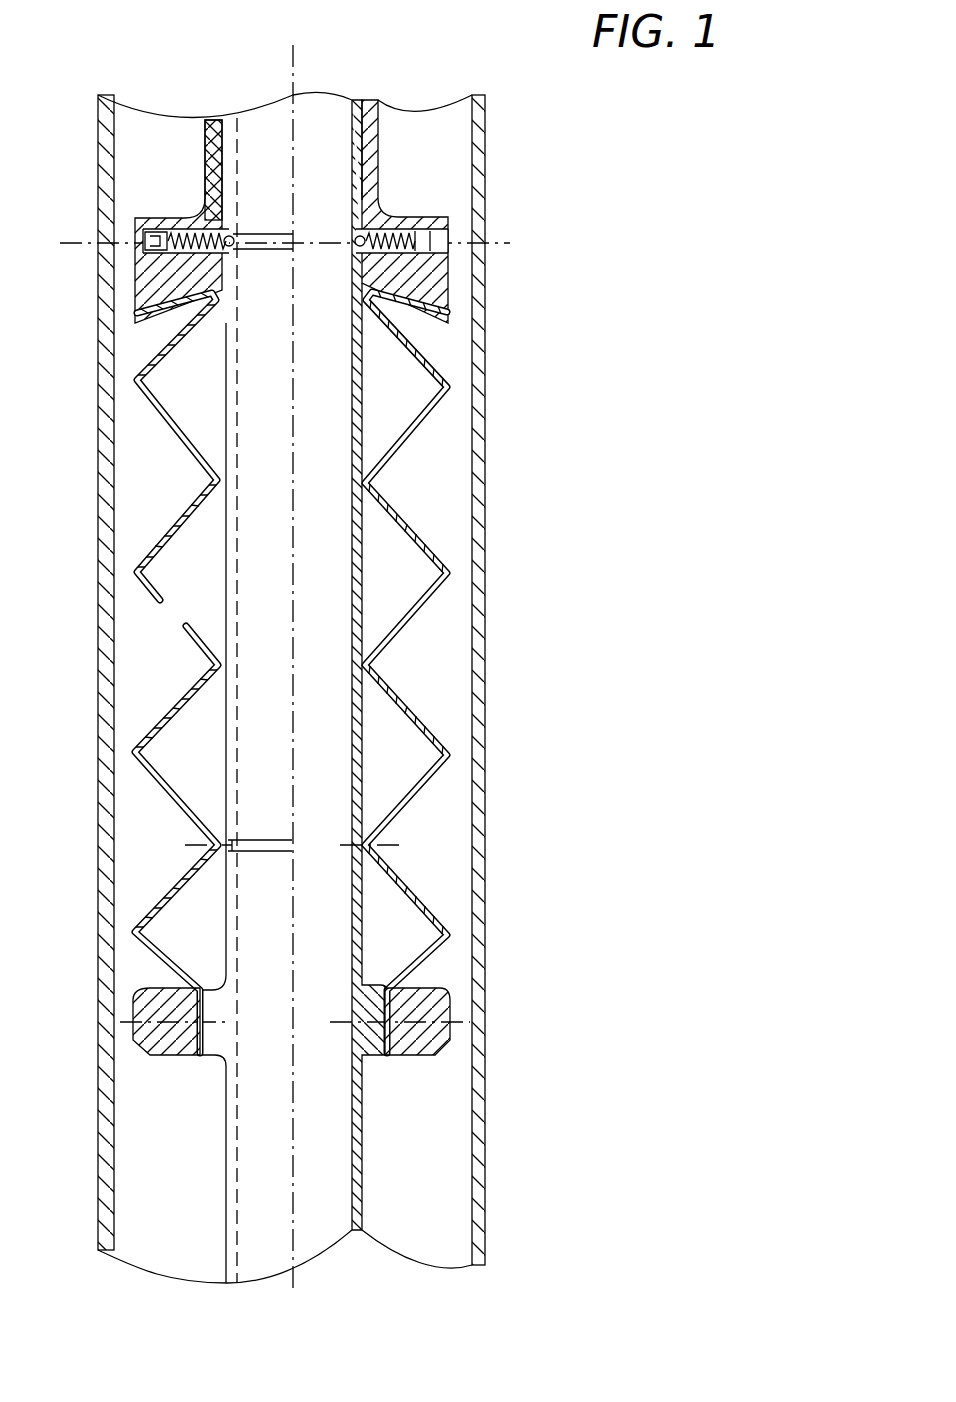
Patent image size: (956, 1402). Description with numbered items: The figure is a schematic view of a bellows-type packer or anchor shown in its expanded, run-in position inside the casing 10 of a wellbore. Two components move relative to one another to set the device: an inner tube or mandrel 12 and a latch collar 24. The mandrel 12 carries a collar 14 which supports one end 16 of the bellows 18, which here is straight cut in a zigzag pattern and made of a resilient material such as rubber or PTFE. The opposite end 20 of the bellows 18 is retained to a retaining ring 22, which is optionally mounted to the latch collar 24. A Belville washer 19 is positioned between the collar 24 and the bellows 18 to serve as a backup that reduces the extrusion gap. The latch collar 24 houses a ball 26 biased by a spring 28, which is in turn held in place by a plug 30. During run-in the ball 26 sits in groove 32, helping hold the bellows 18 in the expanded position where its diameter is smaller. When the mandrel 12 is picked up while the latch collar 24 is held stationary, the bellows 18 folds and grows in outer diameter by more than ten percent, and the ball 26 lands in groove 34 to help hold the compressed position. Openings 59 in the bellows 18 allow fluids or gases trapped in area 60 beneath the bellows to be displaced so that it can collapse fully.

The casing 10 is at (487, 510).
The inner tube or mandrel 12 is at (362, 1207).
The collar 14 is at (448, 998).
The end of bellows 16 is at (387, 1057).
The bellows 18 is at (453, 568).
The Belville washer 19 is at (420, 346).
The opposite end of bellows 20 is at (215, 290).
The retaining ring 22 is at (152, 328).
The latch collar 24 is at (450, 270).
The ball 26 is at (233, 238).
The spring 28 is at (137, 282).
The plug 30 is at (150, 236).
The groove 32 is at (258, 238).
The groove 34 is at (255, 850).
The opening 59 is at (168, 617).
The area 60 is at (200, 577).